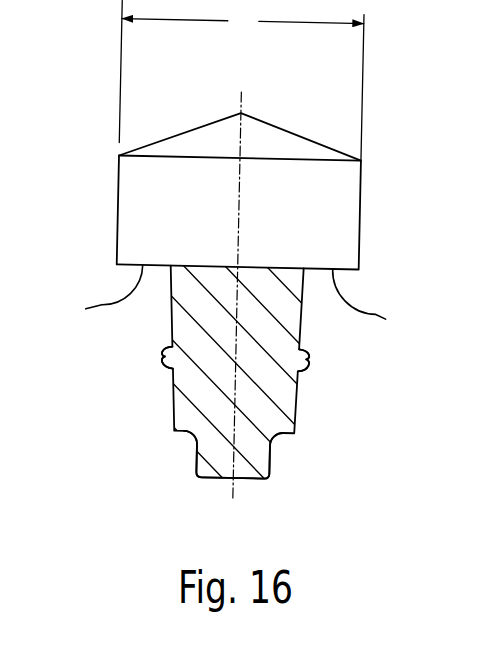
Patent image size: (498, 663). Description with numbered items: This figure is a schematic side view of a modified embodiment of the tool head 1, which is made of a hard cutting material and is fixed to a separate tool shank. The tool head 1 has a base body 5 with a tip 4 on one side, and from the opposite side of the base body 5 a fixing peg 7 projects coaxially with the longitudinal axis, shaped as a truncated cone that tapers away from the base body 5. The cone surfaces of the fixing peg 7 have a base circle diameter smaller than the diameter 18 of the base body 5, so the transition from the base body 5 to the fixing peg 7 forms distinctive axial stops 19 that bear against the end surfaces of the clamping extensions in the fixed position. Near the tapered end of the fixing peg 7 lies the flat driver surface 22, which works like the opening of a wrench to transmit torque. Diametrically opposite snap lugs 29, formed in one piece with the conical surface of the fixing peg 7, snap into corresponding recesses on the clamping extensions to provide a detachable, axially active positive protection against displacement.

The tool head 1 is at (95, 190).
The tip 4 is at (240, 112).
The base body 5 is at (195, 227).
The fixing peg 7 is at (168, 393).
The diameter 18 is at (241, 81).
The axial stops 19 is at (236, 298).
The driver surface 22 is at (191, 458).
The snap lugs 29 is at (165, 357).